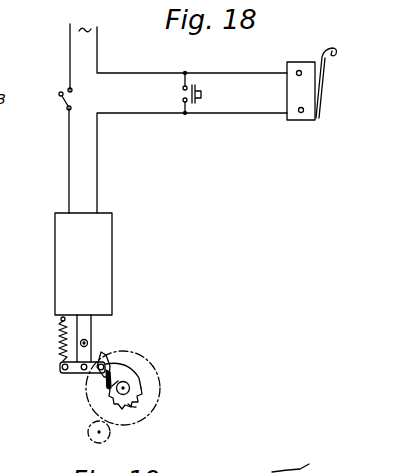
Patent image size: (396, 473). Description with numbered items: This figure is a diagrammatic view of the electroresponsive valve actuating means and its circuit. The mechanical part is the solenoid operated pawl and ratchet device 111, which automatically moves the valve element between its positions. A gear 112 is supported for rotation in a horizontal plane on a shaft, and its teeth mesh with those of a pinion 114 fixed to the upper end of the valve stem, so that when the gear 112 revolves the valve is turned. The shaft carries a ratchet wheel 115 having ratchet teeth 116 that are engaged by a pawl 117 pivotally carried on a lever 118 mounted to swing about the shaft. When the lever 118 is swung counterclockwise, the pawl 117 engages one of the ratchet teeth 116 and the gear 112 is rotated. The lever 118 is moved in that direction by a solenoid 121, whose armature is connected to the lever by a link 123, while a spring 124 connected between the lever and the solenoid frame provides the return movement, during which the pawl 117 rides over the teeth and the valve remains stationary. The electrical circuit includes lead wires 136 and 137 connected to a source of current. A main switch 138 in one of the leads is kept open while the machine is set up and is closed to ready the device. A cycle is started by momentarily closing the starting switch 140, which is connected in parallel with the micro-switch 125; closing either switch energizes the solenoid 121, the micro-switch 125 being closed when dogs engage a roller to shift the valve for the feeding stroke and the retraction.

The solenoid operated pawl and ratchet device 111 is at (117, 337).
The gear 112 is at (159, 373).
The pinion 114 is at (111, 430).
The ratchet wheel 115 is at (140, 389).
The ratchet teeth 116 is at (134, 407).
The pawl 117 is at (110, 355).
The lever 118 is at (118, 382).
The solenoid 121 is at (103, 270).
The link 123 is at (67, 374).
The spring 124 is at (63, 349).
The micro-switch 125 is at (306, 121).
The lead wire 136 is at (69, 183).
The lead wire 137 is at (97, 158).
The main switch 138 is at (60, 97).
The starting switch 140 is at (181, 96).